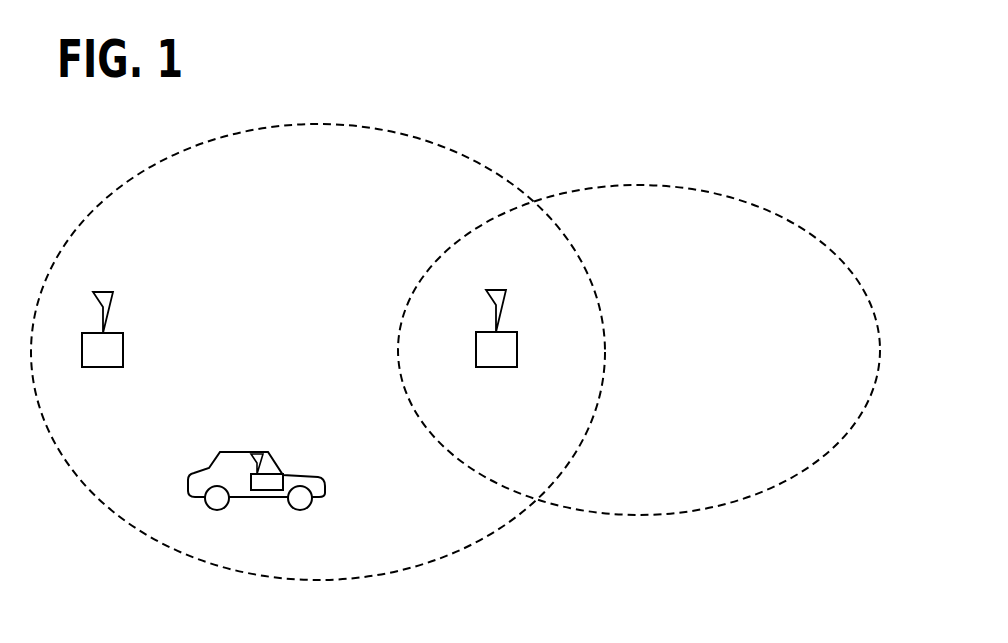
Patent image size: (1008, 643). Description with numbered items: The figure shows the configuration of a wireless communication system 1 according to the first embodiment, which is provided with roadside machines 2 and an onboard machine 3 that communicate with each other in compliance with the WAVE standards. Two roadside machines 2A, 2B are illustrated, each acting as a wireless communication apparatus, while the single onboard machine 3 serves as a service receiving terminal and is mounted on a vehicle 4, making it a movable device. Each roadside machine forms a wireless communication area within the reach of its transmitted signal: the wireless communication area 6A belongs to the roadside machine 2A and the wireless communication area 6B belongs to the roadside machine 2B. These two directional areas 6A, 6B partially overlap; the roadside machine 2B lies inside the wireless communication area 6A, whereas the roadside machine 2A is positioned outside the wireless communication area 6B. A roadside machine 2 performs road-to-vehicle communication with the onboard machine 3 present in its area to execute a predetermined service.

The wireless communication system 1 is at (658, 137).
The roadside machine 2 is at (332, 323).
The roadside machine 2A is at (113, 333).
The roadside machine 2B is at (506, 332).
The onboard machine 3 is at (280, 473).
The vehicle 4 is at (232, 453).
The wireless communication area 6A is at (477, 160).
The wireless communication area 6B is at (817, 238).